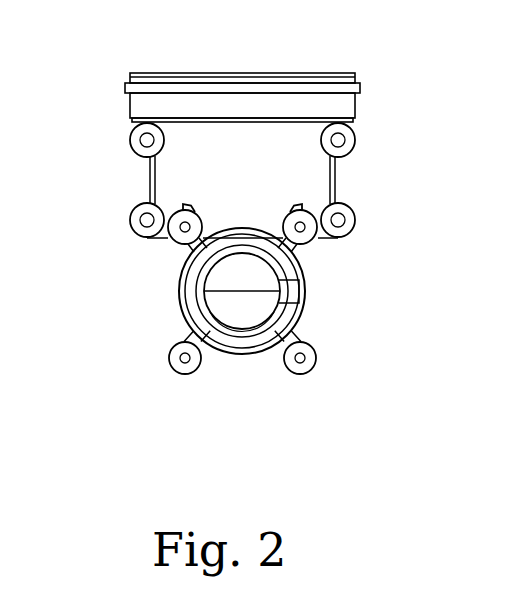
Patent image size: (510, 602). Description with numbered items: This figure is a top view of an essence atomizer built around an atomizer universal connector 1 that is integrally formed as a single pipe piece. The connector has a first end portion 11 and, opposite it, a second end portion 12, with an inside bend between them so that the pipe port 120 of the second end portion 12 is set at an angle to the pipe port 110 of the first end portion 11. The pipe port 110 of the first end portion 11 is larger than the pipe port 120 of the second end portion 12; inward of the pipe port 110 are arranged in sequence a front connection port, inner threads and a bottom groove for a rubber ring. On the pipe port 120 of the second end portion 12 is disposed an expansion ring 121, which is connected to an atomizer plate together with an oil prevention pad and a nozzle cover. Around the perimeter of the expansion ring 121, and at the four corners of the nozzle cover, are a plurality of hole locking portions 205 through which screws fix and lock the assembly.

The atomizer universal connector 1 is at (130, 103).
The pipe port of the first end portion 110 is at (160, 75).
The first end portion 11 is at (163, 182).
The second end portion 12 is at (196, 242).
The pipe port of the second end portion 120 is at (223, 285).
The expansion ring 121 is at (195, 313).
The hole locking portions 205 is at (148, 220).